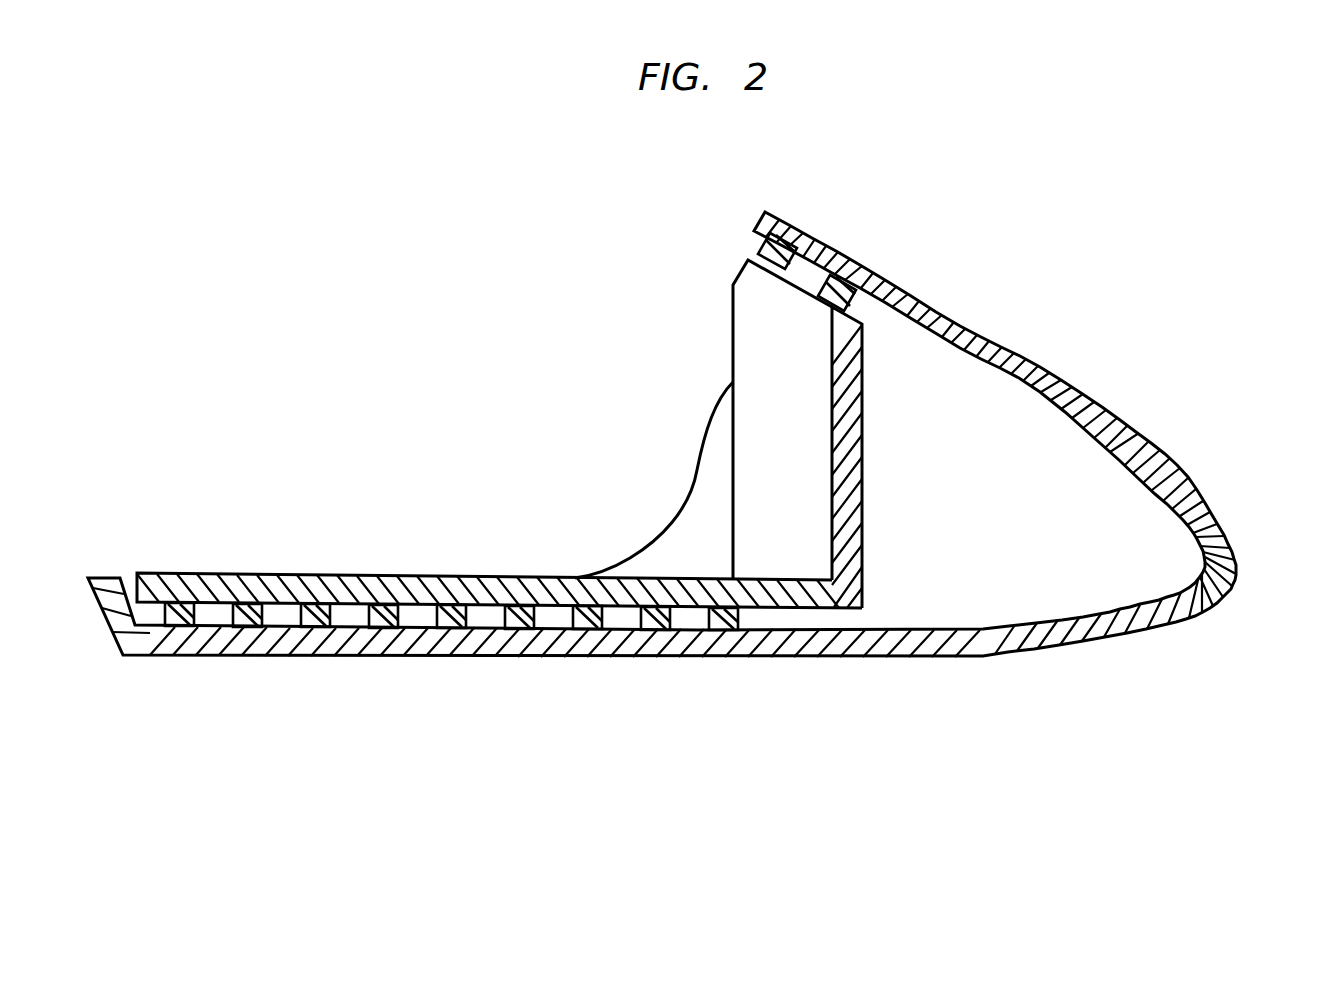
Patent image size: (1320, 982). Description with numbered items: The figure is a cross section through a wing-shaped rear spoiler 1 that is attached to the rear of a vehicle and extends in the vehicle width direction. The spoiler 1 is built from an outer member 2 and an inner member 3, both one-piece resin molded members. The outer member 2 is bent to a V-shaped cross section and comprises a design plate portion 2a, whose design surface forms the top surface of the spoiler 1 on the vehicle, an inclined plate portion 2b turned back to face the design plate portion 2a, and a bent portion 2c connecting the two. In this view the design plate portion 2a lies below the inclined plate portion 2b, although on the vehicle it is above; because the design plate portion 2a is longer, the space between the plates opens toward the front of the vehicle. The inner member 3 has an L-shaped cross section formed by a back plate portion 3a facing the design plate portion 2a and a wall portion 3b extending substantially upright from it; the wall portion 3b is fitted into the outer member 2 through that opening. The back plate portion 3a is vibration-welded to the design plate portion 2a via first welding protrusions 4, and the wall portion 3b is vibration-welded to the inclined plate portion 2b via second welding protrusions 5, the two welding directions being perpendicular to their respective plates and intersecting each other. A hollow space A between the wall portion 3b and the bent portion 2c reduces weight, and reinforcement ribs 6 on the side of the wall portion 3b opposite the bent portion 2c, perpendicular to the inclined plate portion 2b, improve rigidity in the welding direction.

The rear spoiler 1 is at (1141, 253).
The outer member 2 is at (1185, 453).
The design plate portion 2a is at (958, 658).
The inclined plate portion 2b is at (957, 330).
The bent portion 2c is at (1228, 577).
The inner member 3 is at (766, 349).
The back plate portion 3a is at (205, 578).
The wall portion 3b is at (860, 482).
The first welding protrusions 4 is at (384, 627).
The second welding protrusions 5 is at (851, 270).
The reinforcement ribs 6 is at (690, 530).
The hollow space A is at (1063, 550).